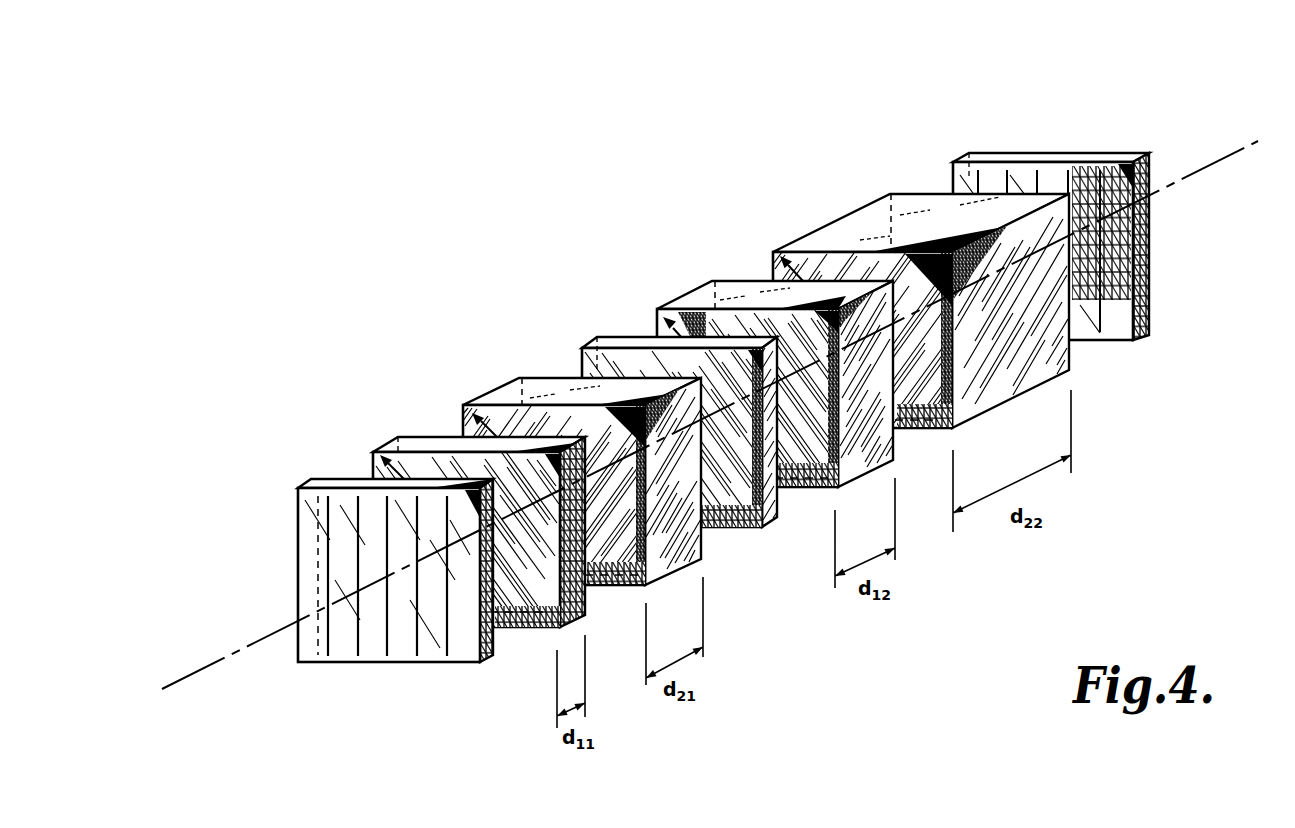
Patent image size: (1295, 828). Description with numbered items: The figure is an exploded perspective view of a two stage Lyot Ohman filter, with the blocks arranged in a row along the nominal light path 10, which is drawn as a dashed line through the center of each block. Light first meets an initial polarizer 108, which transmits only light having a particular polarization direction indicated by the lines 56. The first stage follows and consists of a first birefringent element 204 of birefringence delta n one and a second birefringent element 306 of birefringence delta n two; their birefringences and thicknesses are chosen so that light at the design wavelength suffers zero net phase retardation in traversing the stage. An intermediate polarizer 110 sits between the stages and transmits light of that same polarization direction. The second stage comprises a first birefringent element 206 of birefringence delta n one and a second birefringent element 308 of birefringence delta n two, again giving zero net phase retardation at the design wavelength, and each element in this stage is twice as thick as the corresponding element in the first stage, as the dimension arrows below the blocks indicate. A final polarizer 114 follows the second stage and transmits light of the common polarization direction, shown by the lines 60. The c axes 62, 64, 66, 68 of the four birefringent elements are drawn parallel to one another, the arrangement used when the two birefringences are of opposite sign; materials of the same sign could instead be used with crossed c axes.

The nominal light path 10 is at (1210, 163).
The polarization direction lines 56 is at (305, 647).
The polarization direction lines 60 is at (1118, 294).
The c axis 62 is at (454, 458).
The c axis 64 is at (582, 394).
The c axis 66 is at (775, 303).
The c axis 68 is at (921, 245).
The initial polarizer 108 is at (333, 482).
The intermediate polarizer 110 is at (628, 345).
The final polarizer 114 is at (1022, 157).
The first birefringent element 204 is at (440, 440).
The first birefringent element 206 is at (752, 287).
The second birefringent element 306 is at (550, 385).
The second birefringent element 308 is at (935, 197).